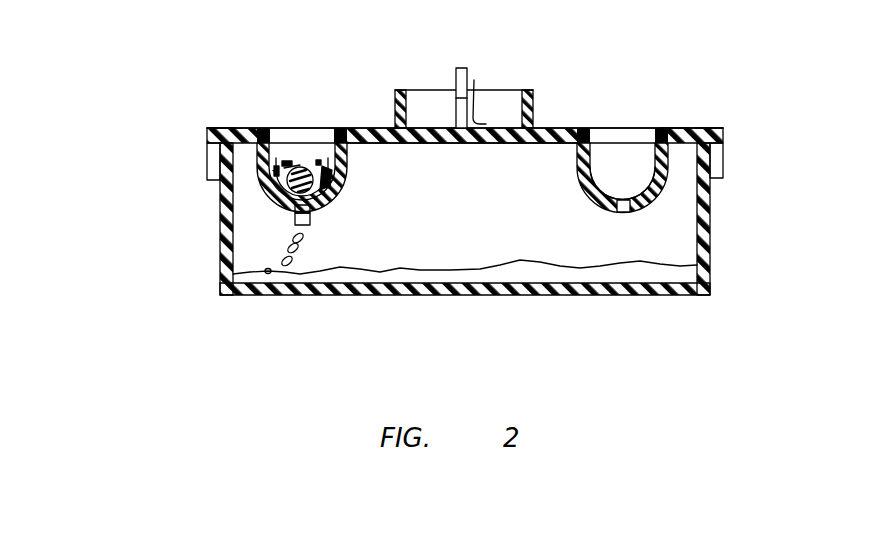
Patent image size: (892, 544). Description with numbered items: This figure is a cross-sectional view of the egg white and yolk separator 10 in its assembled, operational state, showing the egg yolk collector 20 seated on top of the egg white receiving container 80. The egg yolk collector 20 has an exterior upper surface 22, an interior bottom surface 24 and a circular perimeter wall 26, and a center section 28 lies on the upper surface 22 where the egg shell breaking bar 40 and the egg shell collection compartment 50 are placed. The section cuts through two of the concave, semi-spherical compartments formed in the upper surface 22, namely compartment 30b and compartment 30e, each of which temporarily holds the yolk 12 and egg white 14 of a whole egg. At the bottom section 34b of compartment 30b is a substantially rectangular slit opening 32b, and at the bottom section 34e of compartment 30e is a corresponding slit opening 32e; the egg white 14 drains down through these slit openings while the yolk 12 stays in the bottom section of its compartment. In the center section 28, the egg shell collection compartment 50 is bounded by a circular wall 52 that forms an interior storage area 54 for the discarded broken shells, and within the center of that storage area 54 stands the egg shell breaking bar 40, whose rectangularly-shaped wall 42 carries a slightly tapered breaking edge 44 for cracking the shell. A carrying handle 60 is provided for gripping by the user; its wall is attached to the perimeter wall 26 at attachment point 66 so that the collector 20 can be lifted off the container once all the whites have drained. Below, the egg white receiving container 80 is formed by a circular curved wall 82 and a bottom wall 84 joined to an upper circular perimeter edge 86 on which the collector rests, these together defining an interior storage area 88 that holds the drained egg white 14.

The egg white and yolk separator 10 is at (632, 69).
The egg yolk 12 is at (323, 187).
The egg white 14 is at (343, 187).
The egg yolk collector 20 is at (619, 125).
The exterior upper surface 22 is at (673, 128).
The interior bottom surface 24 is at (525, 144).
The circular perimeter wall 26 is at (213, 140).
The center section 28 is at (545, 128).
The concave-shaped compartment 30b is at (328, 156).
The concave-shaped compartment 30e is at (653, 138).
The slit opening 32b is at (311, 222).
The slit opening 32e is at (619, 213).
The bottom section 34b is at (272, 200).
The bottom section 34e is at (619, 203).
The egg shell breaking bar 40 is at (526, 104).
The rectangularly-shaped wall 42 is at (480, 93).
The tapered breaking edge 44 is at (455, 88).
The egg shell collection compartment 50 is at (430, 122).
The circular wall 52 is at (468, 122).
The interior storage area 54 is at (396, 113).
The carrying handle 60 is at (467, 63).
The attachment point 66 is at (474, 80).
The egg white receiving container 80 is at (218, 223).
The circular curved wall 82 is at (222, 194).
The bottom wall 84 is at (355, 285).
The upper circular perimeter edge 86 is at (229, 128).
The interior storage area 88 is at (461, 216).